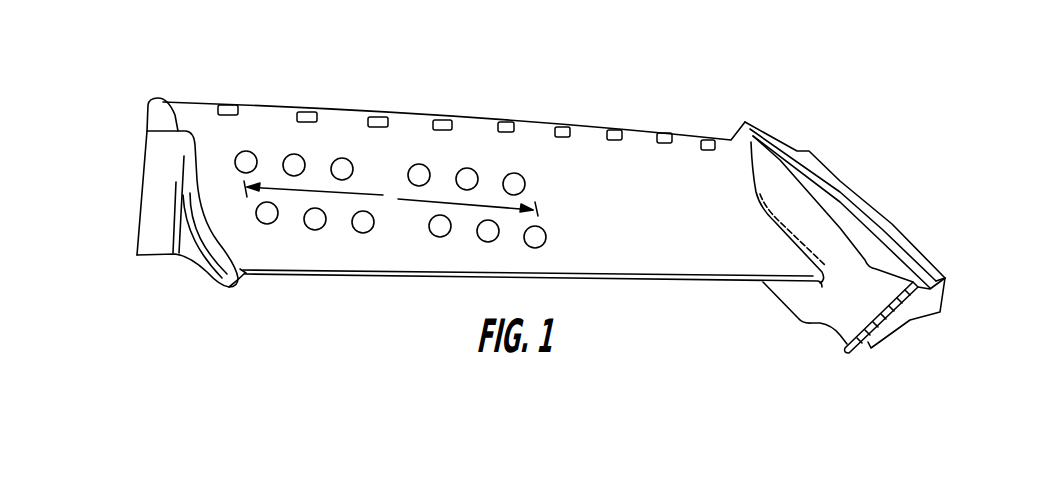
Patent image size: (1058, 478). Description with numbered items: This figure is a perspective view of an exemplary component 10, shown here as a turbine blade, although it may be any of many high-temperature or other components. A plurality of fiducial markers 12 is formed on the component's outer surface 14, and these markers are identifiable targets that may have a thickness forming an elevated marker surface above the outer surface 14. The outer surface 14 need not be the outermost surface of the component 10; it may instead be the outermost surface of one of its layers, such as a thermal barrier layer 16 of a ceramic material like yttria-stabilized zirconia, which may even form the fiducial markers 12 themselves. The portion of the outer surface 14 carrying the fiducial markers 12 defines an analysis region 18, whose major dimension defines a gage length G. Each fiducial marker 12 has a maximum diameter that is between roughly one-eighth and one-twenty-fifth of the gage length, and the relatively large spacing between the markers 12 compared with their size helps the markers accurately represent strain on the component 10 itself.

The component 10 is at (489, 184).
The fiducial markers 12 is at (315, 232).
The outer surface 14 is at (240, 196).
The thermal barrier layer 16 is at (352, 262).
The analysis region 18 is at (541, 152).